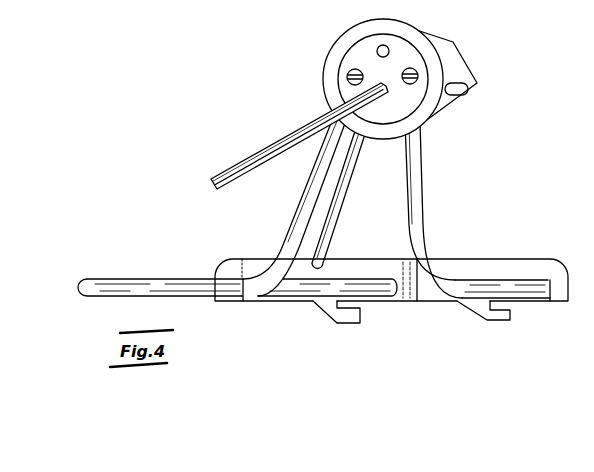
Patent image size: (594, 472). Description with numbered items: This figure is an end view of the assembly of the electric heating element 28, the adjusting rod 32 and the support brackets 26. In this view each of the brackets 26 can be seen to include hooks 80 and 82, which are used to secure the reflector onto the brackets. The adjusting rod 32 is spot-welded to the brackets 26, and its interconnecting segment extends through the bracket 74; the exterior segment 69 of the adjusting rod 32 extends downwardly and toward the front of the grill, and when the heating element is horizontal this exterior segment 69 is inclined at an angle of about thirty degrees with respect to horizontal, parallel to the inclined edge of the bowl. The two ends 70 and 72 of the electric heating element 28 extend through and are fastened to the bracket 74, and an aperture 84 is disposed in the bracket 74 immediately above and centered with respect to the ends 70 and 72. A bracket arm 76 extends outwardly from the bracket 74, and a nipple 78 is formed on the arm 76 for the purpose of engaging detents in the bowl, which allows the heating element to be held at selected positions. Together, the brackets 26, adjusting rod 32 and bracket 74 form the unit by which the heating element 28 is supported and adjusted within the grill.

The bracket 26 is at (490, 262).
The electric heating element 28 is at (295, 8).
The adjusting rod 32 is at (415, 127).
The exterior segment 69 is at (262, 150).
The end of heating element 70 is at (347, 78).
The end of heating element 72 is at (413, 83).
The bracket 74 is at (417, 43).
The bracket arm 76 is at (443, 60).
The nipple 78 is at (469, 82).
The hook 80 is at (343, 313).
The hook 82 is at (502, 317).
The aperture 84 is at (385, 45).